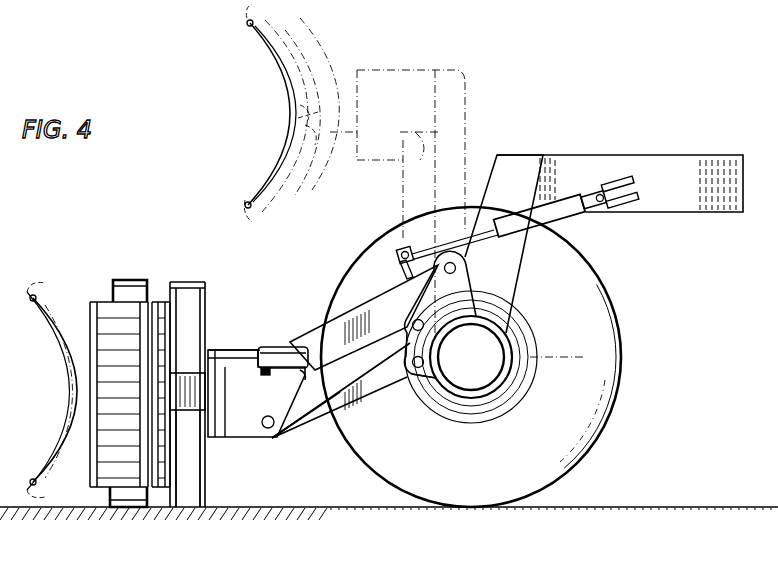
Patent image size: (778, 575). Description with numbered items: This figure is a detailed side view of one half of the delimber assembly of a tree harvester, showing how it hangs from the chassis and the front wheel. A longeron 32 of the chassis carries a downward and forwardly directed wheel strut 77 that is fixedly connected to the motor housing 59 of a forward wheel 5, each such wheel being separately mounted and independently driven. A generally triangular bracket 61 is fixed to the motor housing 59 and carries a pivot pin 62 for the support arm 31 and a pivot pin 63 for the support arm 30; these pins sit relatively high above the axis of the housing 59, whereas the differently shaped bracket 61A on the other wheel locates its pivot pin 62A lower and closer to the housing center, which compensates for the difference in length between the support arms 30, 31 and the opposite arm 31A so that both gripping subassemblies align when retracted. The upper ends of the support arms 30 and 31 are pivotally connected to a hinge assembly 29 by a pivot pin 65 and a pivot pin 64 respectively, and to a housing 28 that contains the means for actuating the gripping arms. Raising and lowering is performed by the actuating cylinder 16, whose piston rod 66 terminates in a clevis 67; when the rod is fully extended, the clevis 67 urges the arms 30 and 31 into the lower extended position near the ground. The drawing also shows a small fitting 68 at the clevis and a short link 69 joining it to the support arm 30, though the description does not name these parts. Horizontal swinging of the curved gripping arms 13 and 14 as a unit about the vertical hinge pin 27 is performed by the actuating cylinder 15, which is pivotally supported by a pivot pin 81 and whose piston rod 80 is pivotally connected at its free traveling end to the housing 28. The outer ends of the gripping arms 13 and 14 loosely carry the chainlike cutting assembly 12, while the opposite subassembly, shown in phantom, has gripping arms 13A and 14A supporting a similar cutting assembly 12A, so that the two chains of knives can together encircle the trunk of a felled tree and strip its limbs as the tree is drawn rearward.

The forward wheel 5 is at (621, 381).
The motor housing 59 is at (538, 372).
The longeron 32 is at (690, 214).
The wheel strut 77 is at (522, 283).
The bracket 61 is at (470, 286).
The bracket 61A is at (410, 386).
The pivot pin 62 is at (412, 331).
The pivot pin 62A is at (425, 362).
The pivot pin 63 is at (451, 276).
The piston rod 66 is at (486, 236).
The actuating cylinder 16 is at (577, 214).
The clevis 67 is at (400, 252).
The pin bracket 68 is at (397, 256).
The link 69 is at (403, 270).
The support arm 30 is at (340, 318).
The support arm 31 is at (366, 388).
The support arm 31A is at (310, 416).
The hinge assembly 29 is at (252, 439).
The housing 28 is at (197, 403).
The hinge pin 27 is at (215, 349).
The piston rod 80 is at (248, 349).
The actuating cylinder 15 is at (283, 347).
The pivot pin 81 is at (266, 375).
The pivot pin 65 is at (306, 381).
The pivot pin 64 is at (275, 429).
The gripping arm 13A is at (130, 282).
The gripping arm 14A is at (130, 498).
The cutting assembly 12 is at (160, 302).
The gripping arm 13 is at (206, 300).
The gripping arm 14 is at (190, 500).
The cutting assembly 12A is at (70, 348).